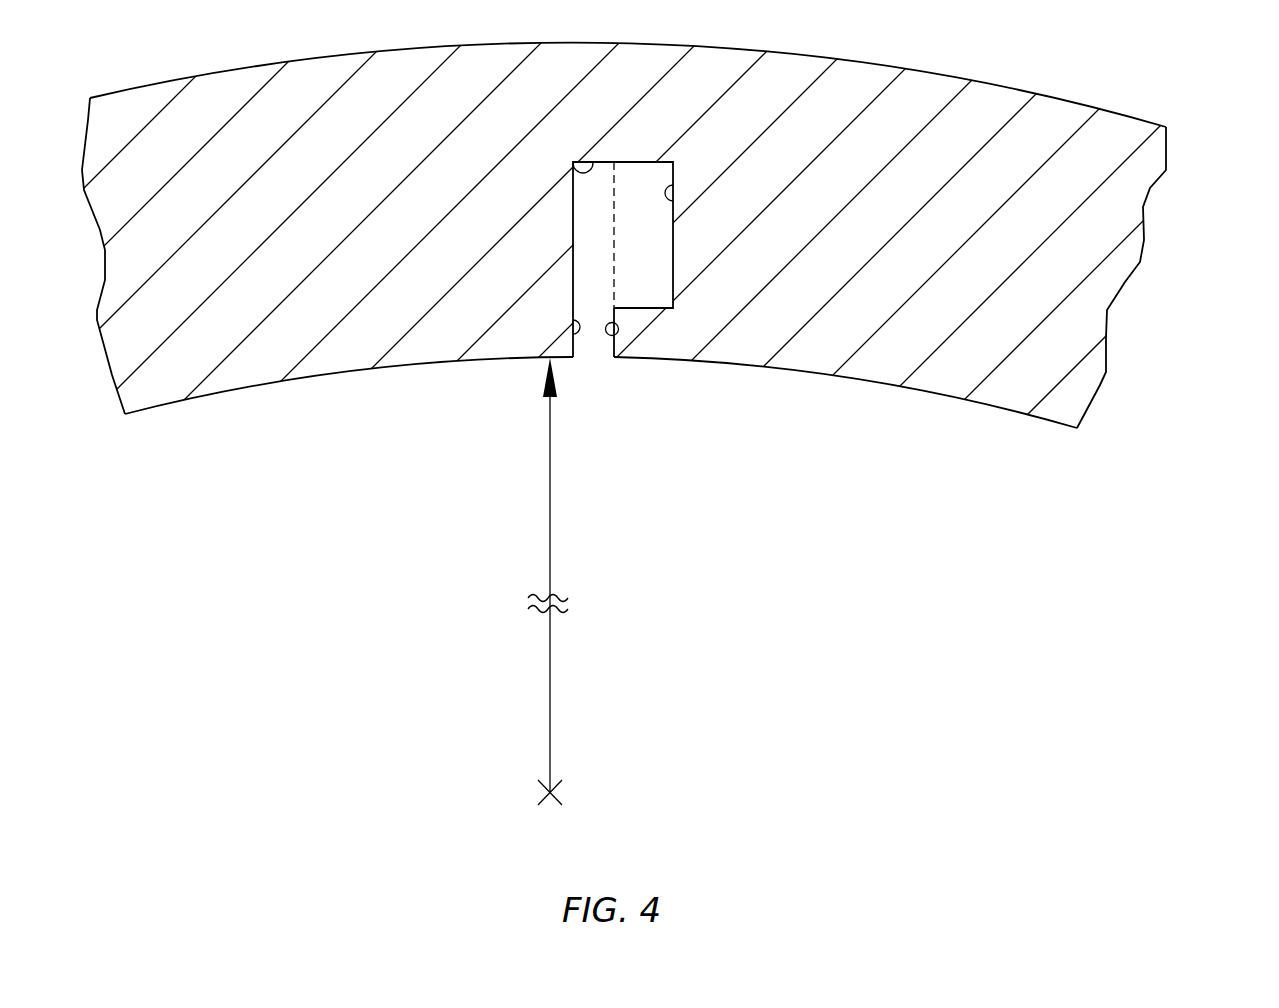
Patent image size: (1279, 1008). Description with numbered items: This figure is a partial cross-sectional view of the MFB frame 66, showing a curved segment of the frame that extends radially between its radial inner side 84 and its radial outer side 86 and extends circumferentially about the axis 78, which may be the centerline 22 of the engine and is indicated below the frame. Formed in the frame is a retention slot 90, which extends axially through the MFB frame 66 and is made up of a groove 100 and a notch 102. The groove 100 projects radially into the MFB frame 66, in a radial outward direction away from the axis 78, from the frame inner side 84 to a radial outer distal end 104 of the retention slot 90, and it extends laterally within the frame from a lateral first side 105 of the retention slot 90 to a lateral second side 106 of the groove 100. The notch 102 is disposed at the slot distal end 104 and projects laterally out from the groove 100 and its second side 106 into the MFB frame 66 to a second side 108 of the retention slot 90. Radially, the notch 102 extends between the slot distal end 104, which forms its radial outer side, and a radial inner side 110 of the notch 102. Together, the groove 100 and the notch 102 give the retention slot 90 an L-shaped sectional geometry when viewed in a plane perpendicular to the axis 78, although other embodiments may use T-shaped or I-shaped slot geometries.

The MFB frame 66 is at (639, 240).
The radial inner side 84 is at (812, 373).
The radial outer side 86 is at (871, 62).
The retention slot 90 is at (637, 202).
The groove 100 is at (596, 380).
The notch 102 is at (672, 242).
The radial outer distal end 104 is at (574, 163).
The lateral first side 105 is at (574, 321).
The lateral second side 106 is at (618, 332).
The second side 108 is at (673, 203).
The radial inner side 110 is at (664, 304).
The centerline 22 is at (611, 590).
The axis 78 is at (558, 796).